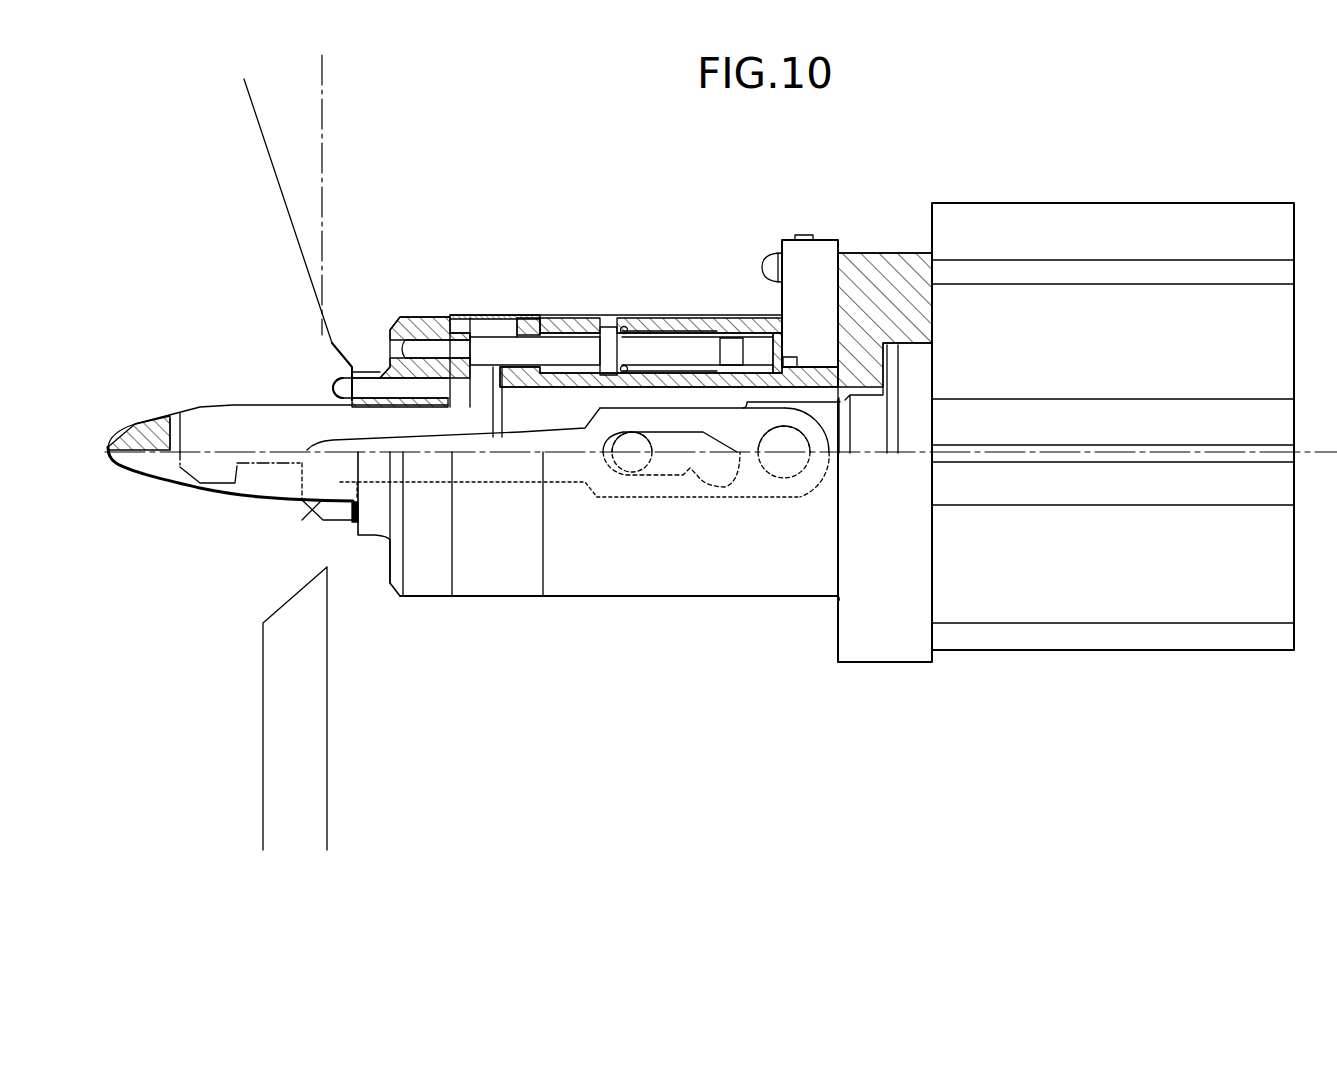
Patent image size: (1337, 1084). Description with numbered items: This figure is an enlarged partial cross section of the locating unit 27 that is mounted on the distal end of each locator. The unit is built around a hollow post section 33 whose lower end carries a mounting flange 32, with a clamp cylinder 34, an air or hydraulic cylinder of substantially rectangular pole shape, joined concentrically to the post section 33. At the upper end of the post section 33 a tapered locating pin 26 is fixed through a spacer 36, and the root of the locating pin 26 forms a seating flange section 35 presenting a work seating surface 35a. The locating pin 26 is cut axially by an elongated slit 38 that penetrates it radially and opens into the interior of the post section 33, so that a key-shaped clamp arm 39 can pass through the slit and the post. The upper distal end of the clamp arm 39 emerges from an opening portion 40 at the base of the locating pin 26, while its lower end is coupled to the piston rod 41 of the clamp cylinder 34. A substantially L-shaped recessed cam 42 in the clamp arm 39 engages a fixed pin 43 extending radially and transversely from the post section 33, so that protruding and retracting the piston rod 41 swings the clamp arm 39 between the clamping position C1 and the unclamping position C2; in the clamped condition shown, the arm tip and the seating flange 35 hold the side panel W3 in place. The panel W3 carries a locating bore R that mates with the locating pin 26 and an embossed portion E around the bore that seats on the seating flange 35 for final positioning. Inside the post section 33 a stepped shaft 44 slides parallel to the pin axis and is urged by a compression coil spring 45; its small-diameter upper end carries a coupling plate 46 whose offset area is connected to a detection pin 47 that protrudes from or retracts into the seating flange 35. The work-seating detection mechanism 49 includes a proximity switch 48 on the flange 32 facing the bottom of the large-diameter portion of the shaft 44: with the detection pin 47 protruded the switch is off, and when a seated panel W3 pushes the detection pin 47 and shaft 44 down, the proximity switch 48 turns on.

The locating pin 26 is at (233, 497).
The locating unit 27 is at (517, 313).
The mounting flange 32 is at (877, 252).
The hollow post section 33 is at (665, 313).
The clamp cylinder 34 is at (1100, 218).
The seating flange section 35 is at (375, 523).
The work seating surface 35a is at (352, 523).
The spacer 36 is at (495, 562).
The elongated slit 38 is at (212, 417).
The clamp arm 39 is at (622, 408).
The opening portion 40 is at (320, 515).
The piston rod 41 is at (837, 450).
The recessed cam 42 is at (698, 468).
The fixed pin 43 is at (632, 455).
The shaft 44 is at (553, 342).
The compression coil spring 45 is at (710, 325).
The coupling plate 46 is at (450, 317).
The detection pin 47 is at (367, 385).
The proximity switch 48 is at (792, 252).
The work-seating detection mechanism 49 is at (830, 232).
The clamping position C1 is at (505, 310).
The unclamping position C2 is at (182, 512).
The embossed portion E is at (330, 333).
The locating bore R is at (352, 400).
The side panel W3 is at (268, 165).